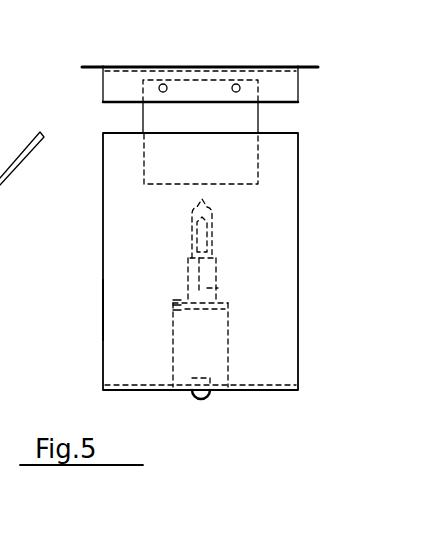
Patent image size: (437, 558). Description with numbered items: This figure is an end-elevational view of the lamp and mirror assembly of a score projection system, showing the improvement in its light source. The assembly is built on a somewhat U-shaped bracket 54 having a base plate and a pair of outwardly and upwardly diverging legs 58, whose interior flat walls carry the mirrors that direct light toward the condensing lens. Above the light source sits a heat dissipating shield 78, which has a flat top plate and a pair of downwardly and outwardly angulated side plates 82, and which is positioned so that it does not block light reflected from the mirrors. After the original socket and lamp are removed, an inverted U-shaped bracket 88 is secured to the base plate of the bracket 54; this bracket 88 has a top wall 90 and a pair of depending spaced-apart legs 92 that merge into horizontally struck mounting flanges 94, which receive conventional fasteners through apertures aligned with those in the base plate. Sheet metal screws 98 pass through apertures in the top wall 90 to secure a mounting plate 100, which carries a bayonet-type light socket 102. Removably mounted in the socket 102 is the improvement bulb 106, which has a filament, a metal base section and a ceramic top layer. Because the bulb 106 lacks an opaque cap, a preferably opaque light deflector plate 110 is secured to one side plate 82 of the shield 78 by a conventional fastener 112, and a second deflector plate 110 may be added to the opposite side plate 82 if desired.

The bracket 54 is at (100, 308).
The legs 58 is at (125, 237).
The heat dissipating shield 78 is at (123, 54).
The side plates 82 is at (125, 85).
The bracket 88 is at (186, 353).
The top wall 90 is at (175, 320).
The legs 92 is at (233, 358).
The mounting flanges 94 is at (228, 390).
The sheet metal screws 98 is at (186, 298).
The mounting plate 100 is at (231, 305).
The light socket 102 is at (219, 290).
The bulb 106 is at (192, 223).
The light deflector plate 110 is at (182, 120).
The fastener 112 is at (164, 84).